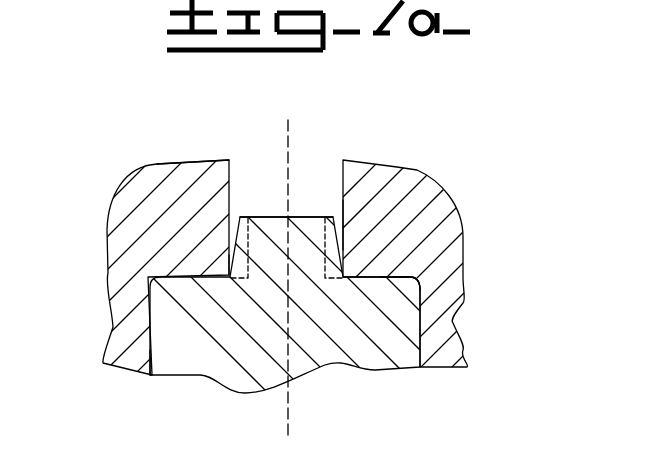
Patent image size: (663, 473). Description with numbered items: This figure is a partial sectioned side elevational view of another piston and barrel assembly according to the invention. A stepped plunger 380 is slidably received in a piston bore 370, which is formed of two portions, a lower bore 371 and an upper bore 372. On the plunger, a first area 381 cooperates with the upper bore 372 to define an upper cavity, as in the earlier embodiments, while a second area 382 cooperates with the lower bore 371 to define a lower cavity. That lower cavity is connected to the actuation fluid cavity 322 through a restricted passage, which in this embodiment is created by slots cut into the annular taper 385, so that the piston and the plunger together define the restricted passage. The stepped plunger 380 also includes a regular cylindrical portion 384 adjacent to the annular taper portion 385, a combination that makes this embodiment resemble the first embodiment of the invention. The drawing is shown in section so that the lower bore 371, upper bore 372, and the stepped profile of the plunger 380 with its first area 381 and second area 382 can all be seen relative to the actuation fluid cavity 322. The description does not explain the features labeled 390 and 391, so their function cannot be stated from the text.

The actuation fluid cavity 322 is at (282, 164).
The piston bore 370 is at (415, 310).
The lower bore 371 is at (152, 360).
The upper bore 372 is at (232, 217).
The stepped plunger 380 is at (420, 357).
The first area 381 is at (312, 217).
The second area 382 is at (405, 277).
The regular cylindrical portion 384 is at (232, 273).
The annular taper portion 385 is at (343, 228).
The gap 390 is at (257, 205).
The bottom corner 391 is at (413, 277).